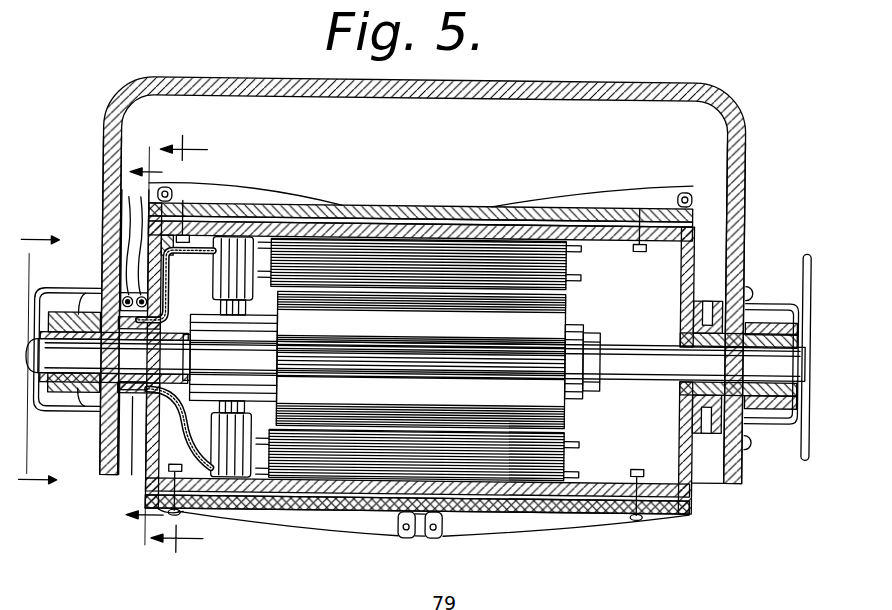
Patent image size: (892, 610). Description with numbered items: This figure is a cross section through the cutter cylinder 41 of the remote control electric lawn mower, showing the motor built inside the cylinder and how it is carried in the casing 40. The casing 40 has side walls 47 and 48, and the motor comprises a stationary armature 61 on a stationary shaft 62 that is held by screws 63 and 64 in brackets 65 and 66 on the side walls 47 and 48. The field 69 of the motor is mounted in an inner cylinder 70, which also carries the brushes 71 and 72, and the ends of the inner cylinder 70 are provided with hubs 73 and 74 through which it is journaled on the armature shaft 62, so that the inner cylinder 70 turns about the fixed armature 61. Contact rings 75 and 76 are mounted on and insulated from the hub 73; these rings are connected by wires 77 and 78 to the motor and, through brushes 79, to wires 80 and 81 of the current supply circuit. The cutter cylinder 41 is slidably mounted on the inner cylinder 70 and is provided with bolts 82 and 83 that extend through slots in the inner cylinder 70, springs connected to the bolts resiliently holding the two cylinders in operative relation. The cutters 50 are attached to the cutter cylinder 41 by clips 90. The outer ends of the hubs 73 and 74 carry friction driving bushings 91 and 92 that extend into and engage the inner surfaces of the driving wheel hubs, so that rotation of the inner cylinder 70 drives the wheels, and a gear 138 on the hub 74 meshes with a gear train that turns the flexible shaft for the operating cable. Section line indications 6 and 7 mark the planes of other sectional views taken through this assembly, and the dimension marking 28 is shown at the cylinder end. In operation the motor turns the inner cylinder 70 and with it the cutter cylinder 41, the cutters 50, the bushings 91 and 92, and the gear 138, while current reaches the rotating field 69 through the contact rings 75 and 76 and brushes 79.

The section line 6- 6 is at (144, 344).
The section line 7- 7 is at (46, 361).
The dimension / offset 28 is at (193, 346).
The casing 40 is at (630, 84).
The cutter cylinder 41 is at (394, 206).
The side wall 47 is at (742, 212).
The side wall 48 is at (109, 479).
The cutters 50 is at (600, 190).
The stationary armature 61 is at (556, 330).
The stationary shaft 62 is at (627, 378).
The screw 63 is at (806, 262).
The screw 64 is at (70, 460).
The bracket 65 is at (780, 303).
The bracket 66 is at (60, 292).
The field 69 is at (574, 264).
The inner cylinder 70 is at (512, 232).
The brush 71 is at (243, 250).
The brush 72 is at (252, 440).
The hub 73 is at (58, 400).
The hub 74 is at (772, 408).
The contact ring 75 is at (133, 428).
The contact ring 76 is at (133, 436).
The wire 77 is at (172, 298).
The wire 78 is at (182, 448).
The brushes 79 is at (118, 309).
The wire 80 is at (136, 242).
The wire 81 is at (137, 246).
The bolt 82 is at (183, 203).
The bolt 83 is at (182, 516).
The clips 90 is at (690, 193).
The friction driving bushing 91 is at (786, 406).
The friction driving bushing 92 is at (74, 416).
The gear 138 is at (700, 325).